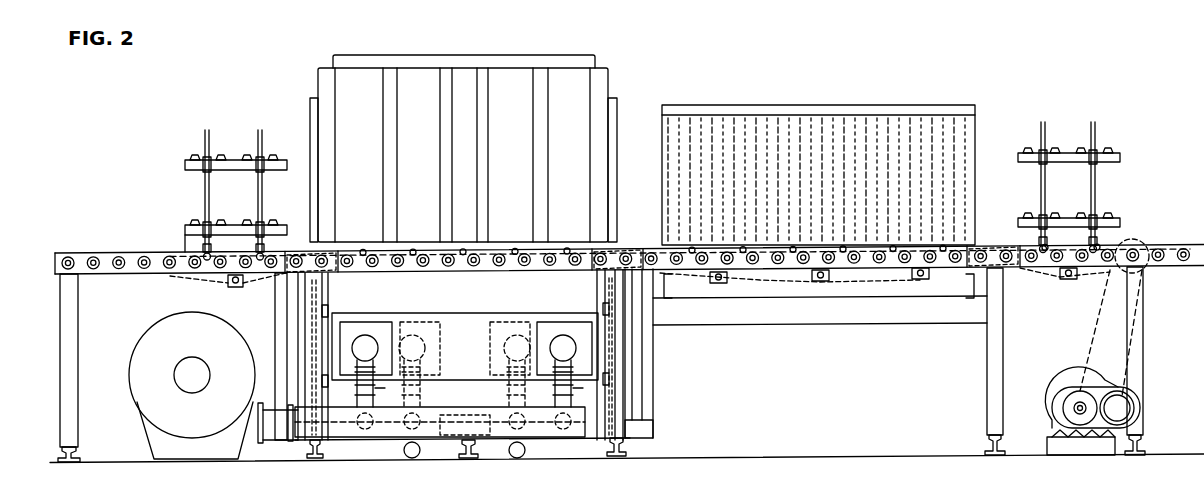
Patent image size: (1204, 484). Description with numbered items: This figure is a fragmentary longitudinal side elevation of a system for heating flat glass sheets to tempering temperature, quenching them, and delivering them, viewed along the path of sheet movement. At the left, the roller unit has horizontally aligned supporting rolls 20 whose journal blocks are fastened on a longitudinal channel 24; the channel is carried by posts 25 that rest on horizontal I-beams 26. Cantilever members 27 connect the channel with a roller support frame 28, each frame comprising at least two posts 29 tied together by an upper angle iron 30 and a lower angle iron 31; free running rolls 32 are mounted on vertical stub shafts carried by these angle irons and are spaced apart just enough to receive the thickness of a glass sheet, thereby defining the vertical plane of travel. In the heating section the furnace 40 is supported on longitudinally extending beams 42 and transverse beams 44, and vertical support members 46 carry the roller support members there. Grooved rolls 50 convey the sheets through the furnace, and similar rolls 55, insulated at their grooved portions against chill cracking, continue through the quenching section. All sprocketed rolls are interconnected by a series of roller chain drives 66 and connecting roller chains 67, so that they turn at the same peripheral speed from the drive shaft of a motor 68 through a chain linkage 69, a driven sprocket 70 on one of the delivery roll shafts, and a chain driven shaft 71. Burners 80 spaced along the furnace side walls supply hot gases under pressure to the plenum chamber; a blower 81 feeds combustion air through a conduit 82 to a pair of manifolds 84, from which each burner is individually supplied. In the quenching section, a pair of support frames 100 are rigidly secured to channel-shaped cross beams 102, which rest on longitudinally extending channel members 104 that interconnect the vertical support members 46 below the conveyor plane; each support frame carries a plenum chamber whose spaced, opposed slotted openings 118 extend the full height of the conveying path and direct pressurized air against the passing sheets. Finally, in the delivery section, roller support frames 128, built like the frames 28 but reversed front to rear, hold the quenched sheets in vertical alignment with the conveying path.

The supporting rolls 20 is at (120, 257).
The channel 24 is at (629, 247).
The posts 25 is at (78, 330).
The I-beams 26 is at (78, 450).
The cantilever members 27 is at (185, 242).
The roller support frames 28 is at (203, 176).
The posts 29 is at (260, 130).
The upper angle iron 30 is at (291, 156).
The lower angle iron 31 is at (287, 227).
The free running rolls 32 is at (247, 222).
The furnace 40 is at (379, 58).
The longitudinally extending beams 42 is at (597, 446).
The transverse beams 44 is at (320, 455).
The vertical support members 46 is at (303, 329).
The rolls 50 is at (447, 257).
The rolls 55 is at (893, 264).
The roller chain drives 66 is at (210, 282).
The connecting roller chains 67 is at (308, 250).
The motor 68 is at (1062, 385).
The chain linkage 69 is at (1096, 331).
The driven sprocket 70 is at (1140, 246).
The chain driven shaft 71 is at (1078, 408).
The burners 80 is at (412, 335).
The blower 81 is at (192, 385).
The conduit 82 is at (250, 442).
The manifolds 84 is at (408, 455).
The support frames 100 is at (661, 169).
The cross beams 102 is at (665, 289).
The channel members 104 is at (848, 326).
The slotted openings 118 is at (928, 165).
The roller support frames 128 is at (1039, 172).